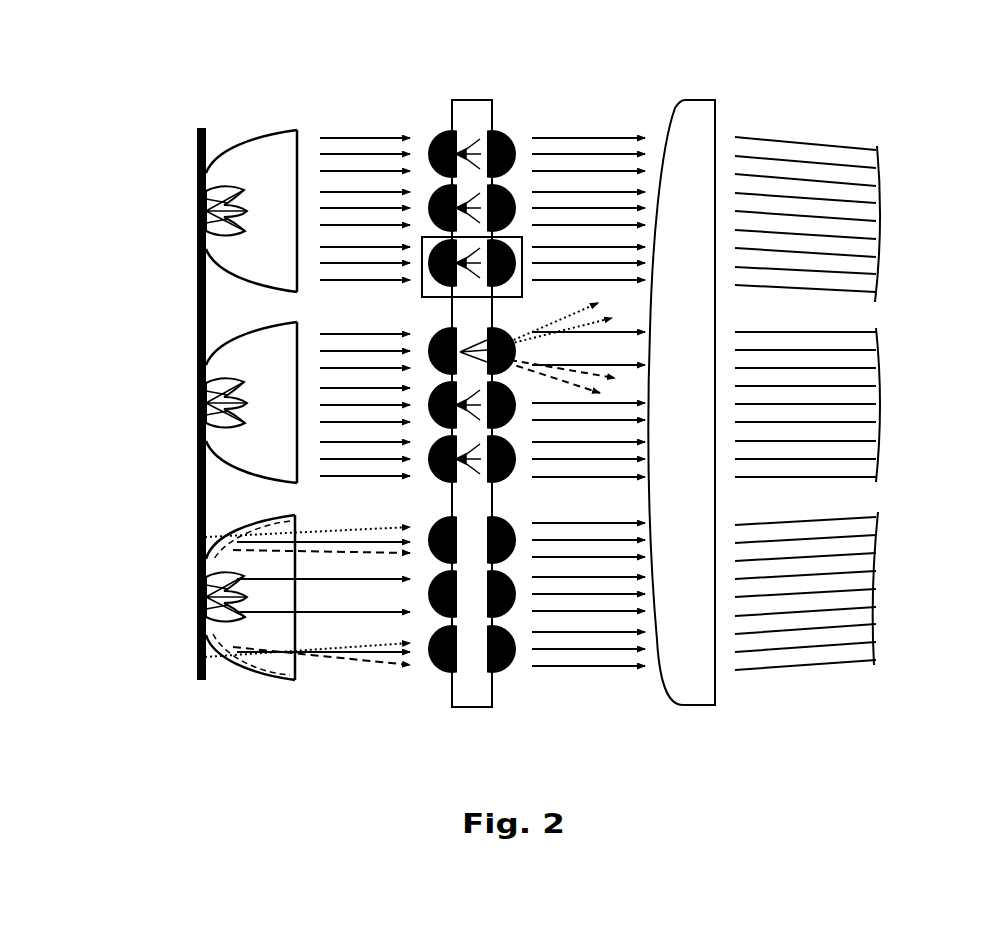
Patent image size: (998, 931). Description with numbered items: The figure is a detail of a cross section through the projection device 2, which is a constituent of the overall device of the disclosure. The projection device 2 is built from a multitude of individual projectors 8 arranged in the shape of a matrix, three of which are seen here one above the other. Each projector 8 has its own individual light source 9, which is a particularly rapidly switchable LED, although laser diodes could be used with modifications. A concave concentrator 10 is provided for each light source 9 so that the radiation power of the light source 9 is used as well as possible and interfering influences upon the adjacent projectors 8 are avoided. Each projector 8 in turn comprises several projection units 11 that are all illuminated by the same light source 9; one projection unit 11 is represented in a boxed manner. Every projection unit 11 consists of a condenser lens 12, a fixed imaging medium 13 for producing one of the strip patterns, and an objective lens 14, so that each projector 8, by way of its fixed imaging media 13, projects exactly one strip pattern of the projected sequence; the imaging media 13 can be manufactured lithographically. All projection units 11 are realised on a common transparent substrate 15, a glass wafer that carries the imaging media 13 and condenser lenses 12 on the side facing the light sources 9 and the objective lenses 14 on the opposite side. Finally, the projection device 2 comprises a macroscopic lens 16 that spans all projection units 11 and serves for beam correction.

The projection device 2 is at (855, 103).
The individual projector 8 is at (110, 297).
The light source 9 is at (200, 207).
The concave concentrator 10 is at (220, 267).
The projection unit 11 is at (468, 297).
The condenser lens 12 is at (440, 146).
The fixed imaging medium 13 is at (465, 133).
The objective lens 14 is at (506, 133).
The transparent substrate 15 is at (470, 707).
The macroscopic lens 16 is at (700, 705).